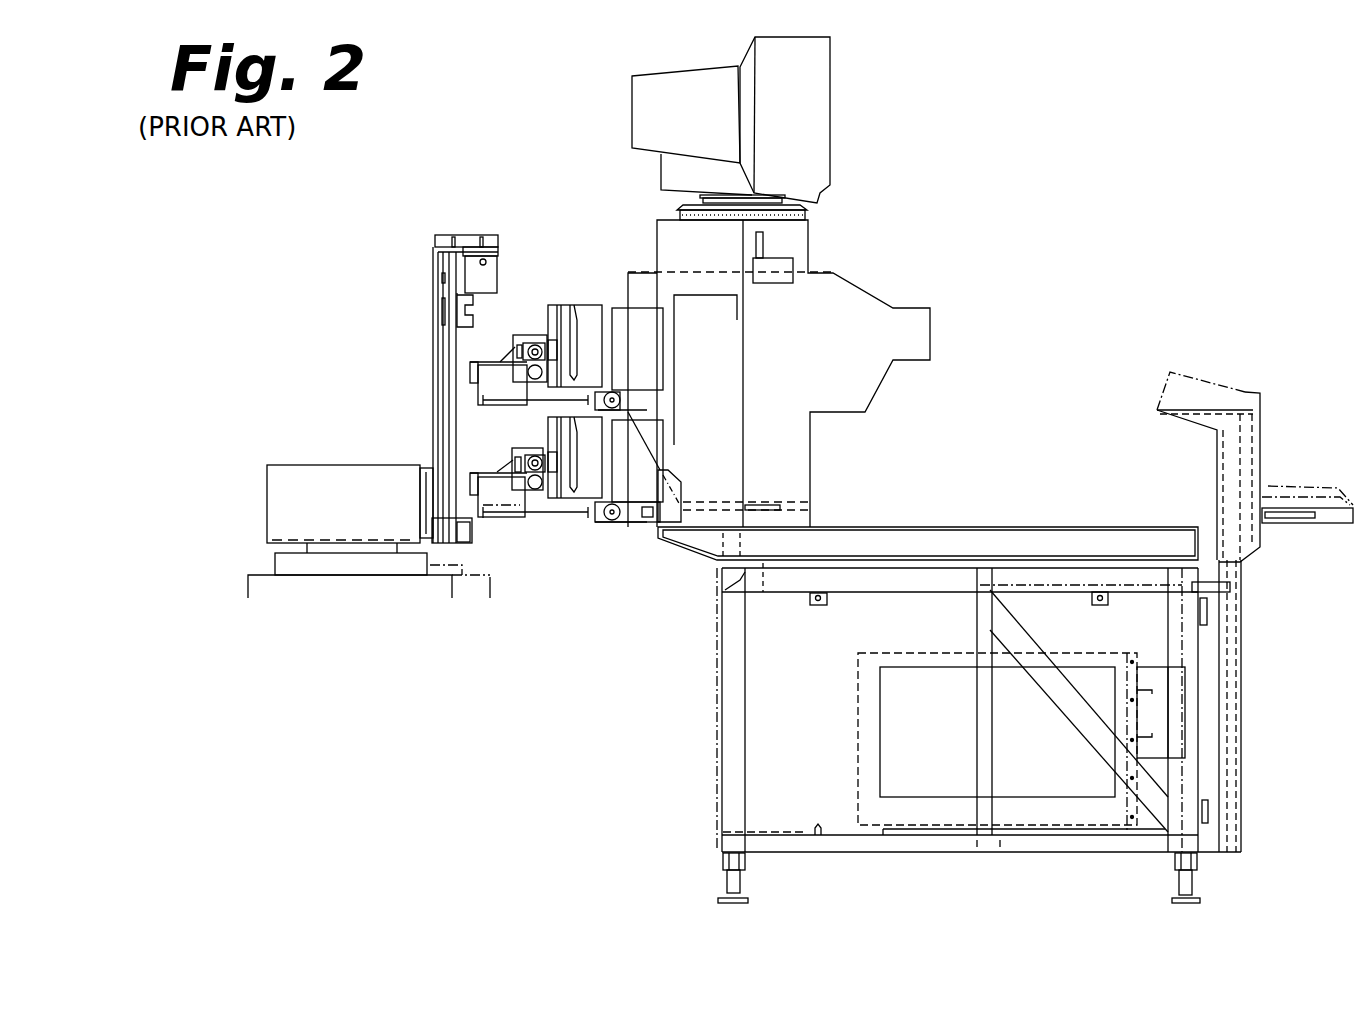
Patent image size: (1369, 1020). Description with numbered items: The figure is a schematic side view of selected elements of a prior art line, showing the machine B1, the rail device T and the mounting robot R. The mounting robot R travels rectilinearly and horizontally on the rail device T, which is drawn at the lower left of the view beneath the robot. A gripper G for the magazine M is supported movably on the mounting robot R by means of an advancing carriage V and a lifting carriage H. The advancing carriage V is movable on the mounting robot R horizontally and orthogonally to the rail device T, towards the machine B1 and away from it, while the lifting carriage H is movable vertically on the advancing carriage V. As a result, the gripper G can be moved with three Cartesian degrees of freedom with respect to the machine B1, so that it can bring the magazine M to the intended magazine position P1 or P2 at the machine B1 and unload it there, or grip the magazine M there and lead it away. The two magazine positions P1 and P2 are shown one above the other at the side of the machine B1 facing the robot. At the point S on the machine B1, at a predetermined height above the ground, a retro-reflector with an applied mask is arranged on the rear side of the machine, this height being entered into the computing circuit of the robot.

The gripper G is at (498, 253).
The magazine M is at (497, 278).
The lifting carriage H is at (473, 315).
The magazine position P2 is at (487, 407).
The magazine position P1 is at (513, 518).
The mounting robot R is at (303, 465).
The advancing carriage V is at (425, 468).
The rail device T is at (305, 577).
The point S is at (653, 532).
The machine B1 is at (1017, 524).